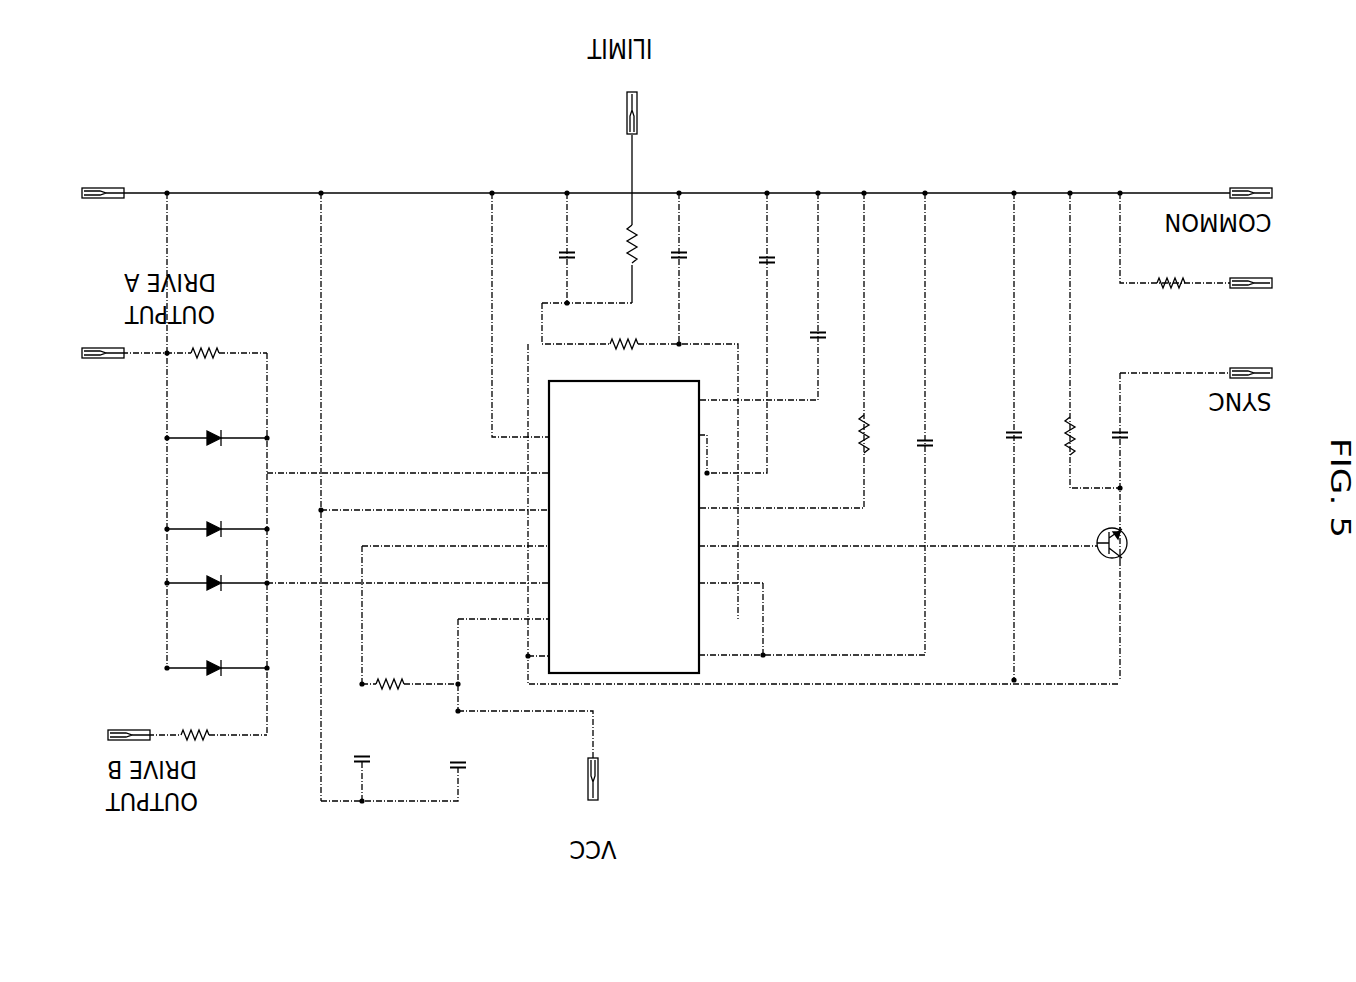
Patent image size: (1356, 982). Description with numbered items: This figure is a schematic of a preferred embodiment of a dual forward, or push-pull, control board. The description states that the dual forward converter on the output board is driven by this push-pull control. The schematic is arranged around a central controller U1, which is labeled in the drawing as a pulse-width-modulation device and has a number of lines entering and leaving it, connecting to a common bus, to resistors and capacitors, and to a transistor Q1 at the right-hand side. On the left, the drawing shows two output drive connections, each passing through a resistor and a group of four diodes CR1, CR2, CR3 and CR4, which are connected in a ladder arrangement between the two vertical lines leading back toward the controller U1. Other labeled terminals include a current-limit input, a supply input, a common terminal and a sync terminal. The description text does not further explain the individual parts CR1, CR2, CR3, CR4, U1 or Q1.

The diode CR1 is at (216, 602).
The diode CR2 is at (216, 512).
The diode CR3 is at (216, 686).
The diode CR4 is at (216, 419).
The PWM controller U1 is at (628, 553).
The transistor Q1 is at (1132, 543).